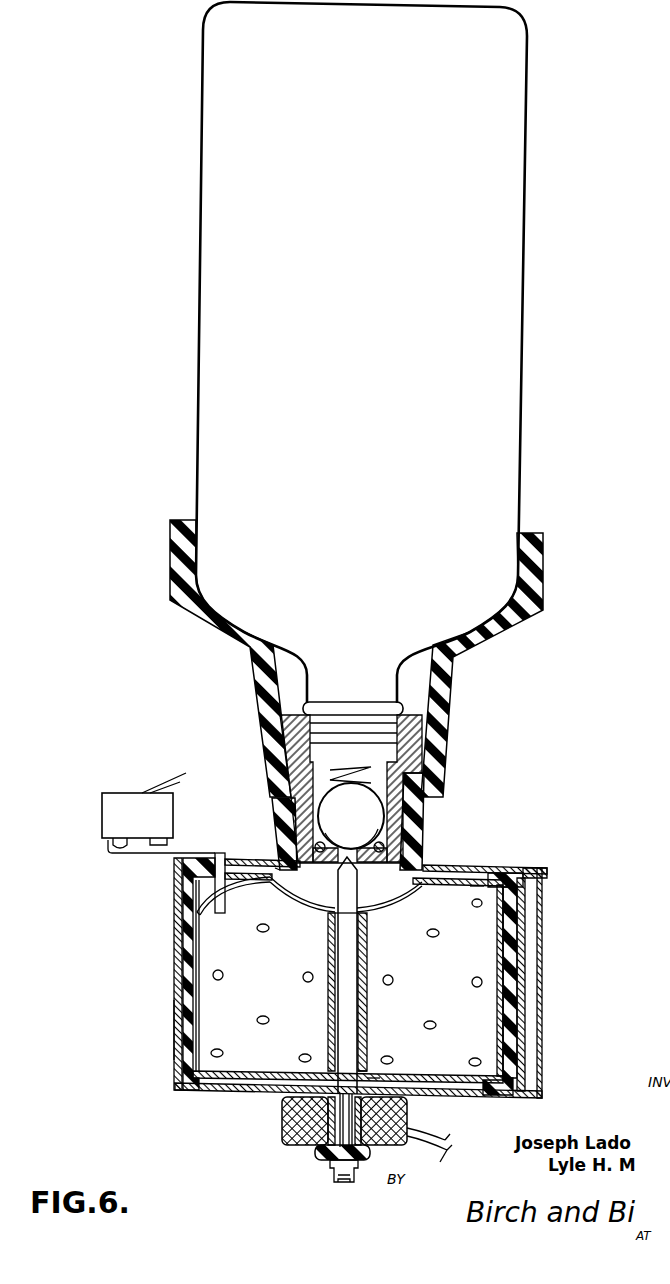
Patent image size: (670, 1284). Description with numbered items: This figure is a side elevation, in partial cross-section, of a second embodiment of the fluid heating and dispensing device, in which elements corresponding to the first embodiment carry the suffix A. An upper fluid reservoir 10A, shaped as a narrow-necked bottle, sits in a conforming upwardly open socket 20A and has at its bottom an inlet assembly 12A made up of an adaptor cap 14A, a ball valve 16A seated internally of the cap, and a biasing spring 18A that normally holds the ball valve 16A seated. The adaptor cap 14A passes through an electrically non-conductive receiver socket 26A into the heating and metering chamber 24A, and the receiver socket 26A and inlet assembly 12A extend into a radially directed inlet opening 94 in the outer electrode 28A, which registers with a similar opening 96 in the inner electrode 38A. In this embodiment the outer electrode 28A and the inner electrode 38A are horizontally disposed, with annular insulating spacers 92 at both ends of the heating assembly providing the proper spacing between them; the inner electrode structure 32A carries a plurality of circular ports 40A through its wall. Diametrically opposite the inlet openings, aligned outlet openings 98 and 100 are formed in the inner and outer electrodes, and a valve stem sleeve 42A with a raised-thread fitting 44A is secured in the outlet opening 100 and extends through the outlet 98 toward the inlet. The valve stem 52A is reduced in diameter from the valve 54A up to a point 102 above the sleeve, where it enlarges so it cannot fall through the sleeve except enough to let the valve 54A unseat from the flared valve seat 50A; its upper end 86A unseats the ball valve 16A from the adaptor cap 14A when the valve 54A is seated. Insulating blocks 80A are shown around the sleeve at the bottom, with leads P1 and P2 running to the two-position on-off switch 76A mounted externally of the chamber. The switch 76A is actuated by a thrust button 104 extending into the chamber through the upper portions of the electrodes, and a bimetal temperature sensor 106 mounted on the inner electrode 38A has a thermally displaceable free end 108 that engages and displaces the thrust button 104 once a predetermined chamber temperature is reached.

The upper fluid reservoir 10A is at (338, 344).
The inlet assembly 12A is at (280, 826).
The adaptor cap 14A is at (420, 810).
The ball valve 16A is at (366, 826).
The biasing spring 18A is at (360, 765).
The socket 20A is at (500, 633).
The heating and metering chamber 24A is at (275, 1060).
The receiver socket 26A is at (443, 785).
The outer electrode 28A is at (466, 870).
The inner electrode structure 32A is at (200, 1047).
The inner electrode 38A is at (464, 882).
The circular ports 40A is at (218, 1048).
The valve stem sleeve 42A is at (368, 1000).
The raised-thread fitting 44A is at (330, 958).
The valve seat 50A is at (316, 1150).
The valve stem 52A is at (368, 940).
The valve 54A is at (328, 1163).
The on-off switch 76A is at (121, 821).
The insulating blocks 80A is at (282, 1129).
The upper end of valve stem 86A is at (348, 862).
The annular insulating spacers 92 is at (190, 1091).
The inlet opening 94 is at (275, 868).
The inlet opening 96 is at (330, 905).
The outlet opening 98 is at (363, 1072).
The outlet opening 100 is at (380, 1080).
The enlarged point of valve stem 102 is at (368, 912).
The thrust button 104 is at (218, 891).
The bimetal temperature sensor 106 is at (258, 908).
The thermally displaceable free end 108 is at (214, 914).
The wire P1 is at (428, 1153).
The wire P2 is at (167, 773).